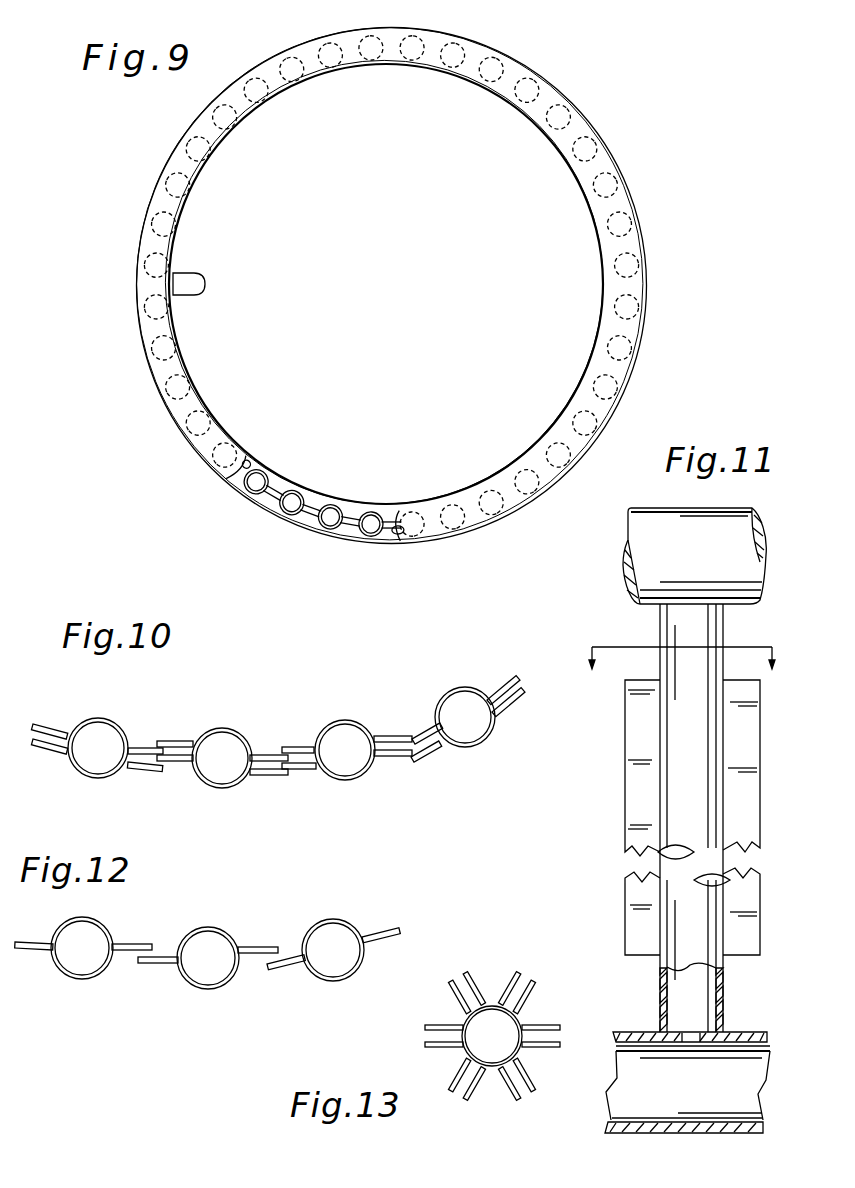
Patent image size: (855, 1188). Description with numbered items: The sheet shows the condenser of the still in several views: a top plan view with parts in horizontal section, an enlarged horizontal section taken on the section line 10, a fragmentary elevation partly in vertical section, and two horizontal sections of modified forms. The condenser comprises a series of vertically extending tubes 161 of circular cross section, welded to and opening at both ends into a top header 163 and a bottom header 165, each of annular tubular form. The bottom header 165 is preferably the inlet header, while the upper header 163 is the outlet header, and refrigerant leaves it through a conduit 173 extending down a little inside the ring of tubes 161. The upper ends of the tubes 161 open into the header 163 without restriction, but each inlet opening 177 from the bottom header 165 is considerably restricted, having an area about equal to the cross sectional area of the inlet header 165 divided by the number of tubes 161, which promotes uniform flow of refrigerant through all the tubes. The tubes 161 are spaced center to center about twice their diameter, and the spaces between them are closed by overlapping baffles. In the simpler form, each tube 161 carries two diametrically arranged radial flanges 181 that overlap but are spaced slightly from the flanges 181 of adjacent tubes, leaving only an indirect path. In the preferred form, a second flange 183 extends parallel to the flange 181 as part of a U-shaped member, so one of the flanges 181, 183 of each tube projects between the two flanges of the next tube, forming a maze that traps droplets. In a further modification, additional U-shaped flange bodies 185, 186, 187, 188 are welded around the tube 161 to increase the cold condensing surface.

In FIG. 11, the section line 10 is at (671, 645).
In FIG. 9, the vertically extending tubes 161 is at (331, 506).
In FIG. 10, the vertically extending tubes 161 is at (82, 778).
In FIG. 12, the vertically extending tubes 161 is at (76, 980).
In FIG. 13, the vertically extending tubes 161 is at (522, 1020).
In FIG. 11, the vertically extending tubes 161 is at (660, 622).
In FIG. 9, the top header 163 is at (535, 459).
In FIG. 11, the top header 163 is at (635, 540).
In FIG. 9, the bottom header 165 is at (258, 506).
In FIG. 11, the bottom header 165 is at (742, 1032).
In FIG. 9, the conduit 173 is at (200, 275).
In FIG. 11, the inlet opening 177 is at (690, 1040).
In FIG. 9, the radial flange 181 is at (359, 533).
In FIG. 10, the radial flange 181 is at (144, 746).
In FIG. 12, the radial flange 181 is at (135, 944).
In FIG. 13, the radial flange 181 is at (430, 1048).
In FIG. 11, the radial flange 181 is at (637, 784).
In FIG. 9, the second flange 183 is at (345, 531).
In FIG. 10, the second flange 183 is at (172, 738).
In FIG. 13, the second flange 183 is at (428, 1024).
In FIG. 11, the second flange 183 is at (750, 840).
In FIG. 13, the U-shaped flange body 185 is at (452, 982).
In FIG. 13, the U-shaped flange body 186 is at (530, 982).
In FIG. 13, the U-shaped flange body 187 is at (512, 1090).
In FIG. 13, the U-shaped flange body 188 is at (456, 1090).